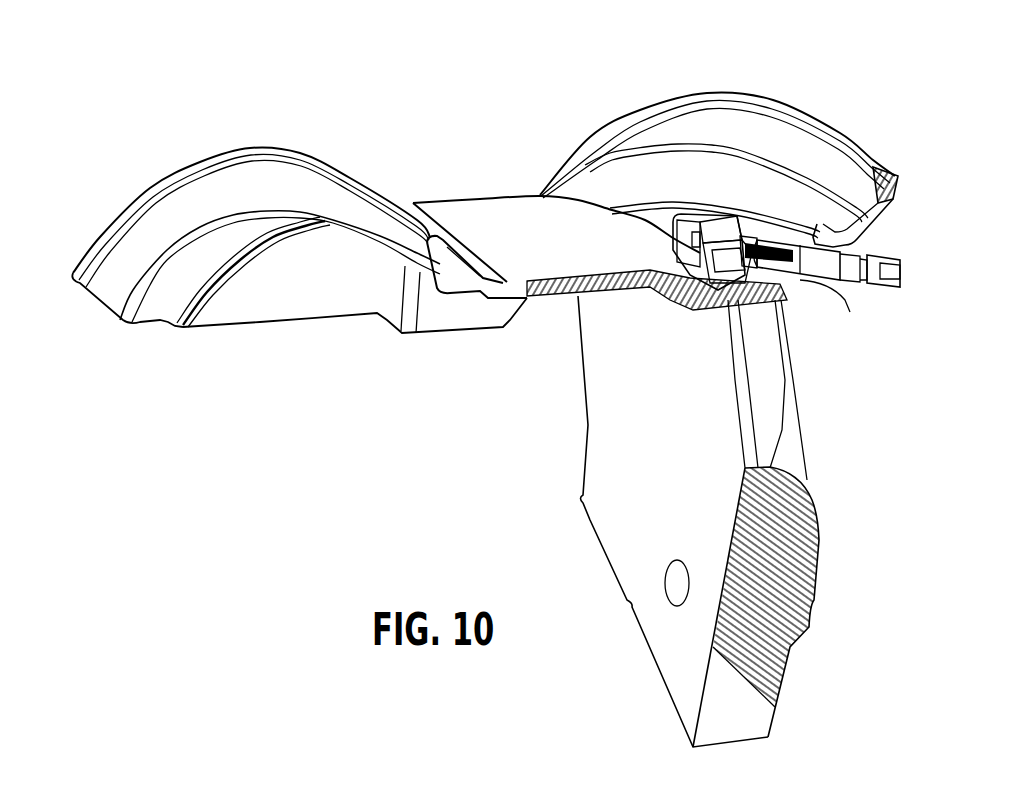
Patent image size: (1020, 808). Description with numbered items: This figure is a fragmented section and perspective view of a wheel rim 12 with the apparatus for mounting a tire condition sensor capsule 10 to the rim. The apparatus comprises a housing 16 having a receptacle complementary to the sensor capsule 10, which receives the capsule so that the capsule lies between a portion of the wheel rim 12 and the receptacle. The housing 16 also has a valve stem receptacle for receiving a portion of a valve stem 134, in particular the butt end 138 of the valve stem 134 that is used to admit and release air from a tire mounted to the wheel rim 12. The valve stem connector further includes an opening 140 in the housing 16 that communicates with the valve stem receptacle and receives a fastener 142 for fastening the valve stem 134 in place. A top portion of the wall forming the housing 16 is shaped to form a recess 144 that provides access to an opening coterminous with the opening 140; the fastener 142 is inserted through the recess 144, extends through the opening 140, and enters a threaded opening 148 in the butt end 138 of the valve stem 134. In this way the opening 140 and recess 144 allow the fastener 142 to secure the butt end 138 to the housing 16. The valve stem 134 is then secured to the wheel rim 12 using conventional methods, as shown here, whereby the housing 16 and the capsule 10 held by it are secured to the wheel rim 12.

The tire condition sensor capsule 10 is at (725, 227).
The wheel rim 12 is at (858, 190).
The housing 16 is at (620, 282).
The valve stem 134 is at (832, 272).
The butt end 138 is at (790, 236).
The opening 140 is at (757, 236).
The fastener 142 is at (710, 223).
The recess 144 is at (713, 225).
The threaded opening 148 is at (787, 300).